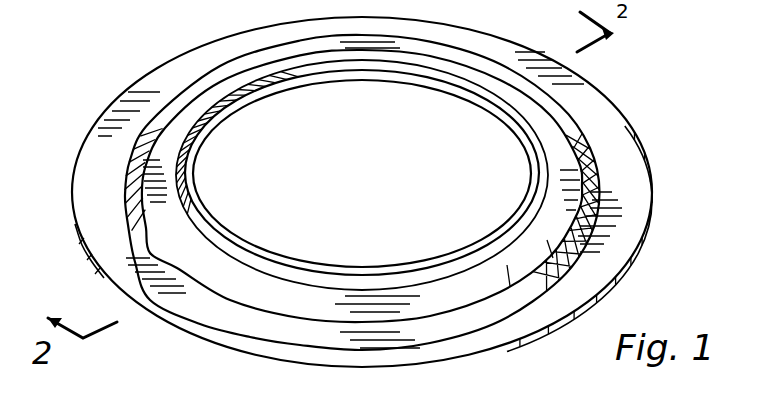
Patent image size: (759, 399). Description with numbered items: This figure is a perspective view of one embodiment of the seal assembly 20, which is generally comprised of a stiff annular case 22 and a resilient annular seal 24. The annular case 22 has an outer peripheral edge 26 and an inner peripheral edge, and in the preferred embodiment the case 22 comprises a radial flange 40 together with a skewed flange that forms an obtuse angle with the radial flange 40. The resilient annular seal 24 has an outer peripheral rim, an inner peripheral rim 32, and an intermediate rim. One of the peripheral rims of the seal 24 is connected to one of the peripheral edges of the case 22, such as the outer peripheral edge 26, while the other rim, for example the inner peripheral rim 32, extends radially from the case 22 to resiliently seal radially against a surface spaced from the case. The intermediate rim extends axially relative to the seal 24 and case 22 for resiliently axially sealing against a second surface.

The seal assembly 20 is at (128, 74).
The annular case 22 is at (98, 207).
The annular seal 24 is at (398, 82).
The outer peripheral edge 26 is at (630, 270).
The inner peripheral rim 32 is at (203, 200).
The radial flange 40 is at (223, 317).